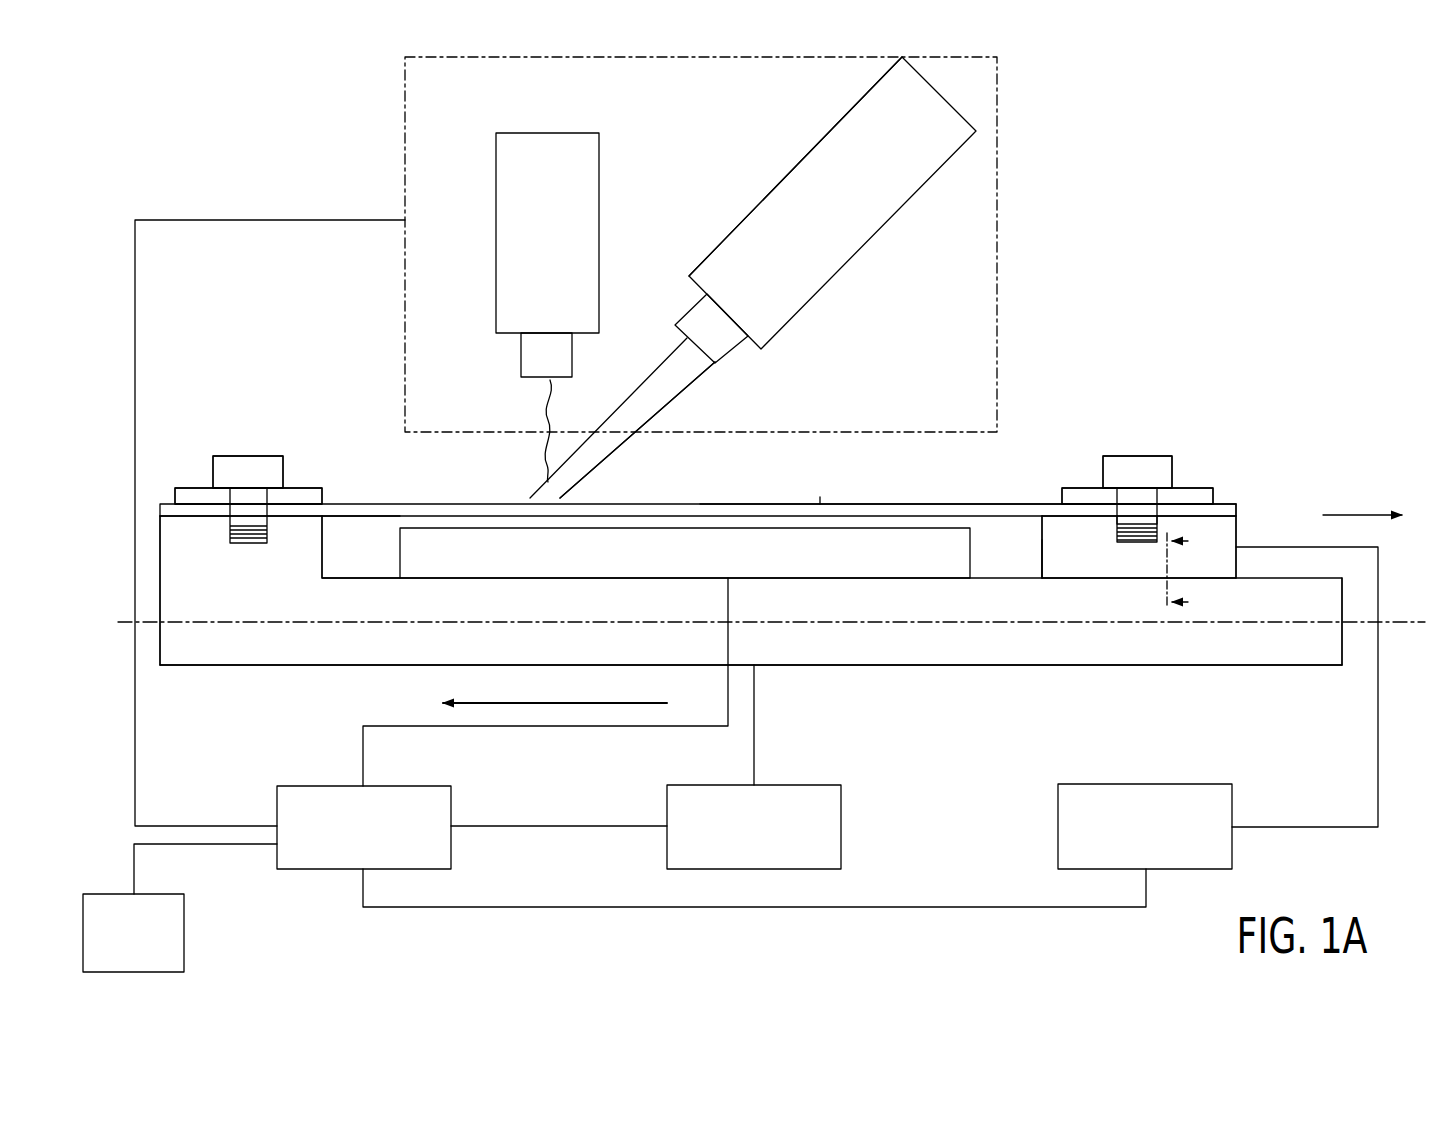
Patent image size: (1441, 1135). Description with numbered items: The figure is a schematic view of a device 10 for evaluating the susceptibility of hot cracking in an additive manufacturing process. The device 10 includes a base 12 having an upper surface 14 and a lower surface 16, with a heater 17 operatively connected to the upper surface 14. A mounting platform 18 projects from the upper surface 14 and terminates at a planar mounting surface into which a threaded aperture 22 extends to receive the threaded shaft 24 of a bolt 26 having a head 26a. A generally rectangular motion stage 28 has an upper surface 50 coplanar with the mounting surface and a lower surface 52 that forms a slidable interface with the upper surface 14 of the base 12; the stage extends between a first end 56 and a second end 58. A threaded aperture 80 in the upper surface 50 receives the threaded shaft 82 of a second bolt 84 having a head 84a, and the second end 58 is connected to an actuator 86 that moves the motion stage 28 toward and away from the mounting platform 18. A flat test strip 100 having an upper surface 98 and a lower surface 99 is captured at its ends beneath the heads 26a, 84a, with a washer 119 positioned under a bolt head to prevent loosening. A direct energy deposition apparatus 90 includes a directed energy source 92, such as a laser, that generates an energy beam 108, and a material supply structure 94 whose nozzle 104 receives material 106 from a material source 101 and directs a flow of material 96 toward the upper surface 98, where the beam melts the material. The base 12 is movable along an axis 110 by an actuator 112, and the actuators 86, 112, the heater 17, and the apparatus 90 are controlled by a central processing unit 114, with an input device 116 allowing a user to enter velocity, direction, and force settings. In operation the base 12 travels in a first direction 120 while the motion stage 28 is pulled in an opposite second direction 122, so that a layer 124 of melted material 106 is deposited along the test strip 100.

The device 10 is at (1295, 451).
The base 12 is at (875, 674).
The upper surface 14 is at (1320, 582).
The lower surface 16 is at (260, 666).
The heater 17 is at (971, 568).
The mounting platform 18 is at (159, 535).
The threaded aperture 22 is at (310, 547).
The threaded shaft 24 is at (242, 549).
The bolt 26 is at (288, 447).
The head 26a is at (248, 456).
The motion stage 28 is at (1055, 521).
The upper surface 50 is at (1231, 514).
The lower surface 52 is at (1240, 614).
The first end 56 is at (1041, 562).
The second end 58 is at (1237, 530).
The threaded aperture 80 is at (1125, 541).
The threaded shaft 82 is at (1108, 525).
The bolt 84 is at (1179, 446).
The head 84a is at (1138, 456).
The actuator 86 is at (1233, 809).
The direct energy deposition apparatus 90 is at (1032, 147).
The directed energy source 92 is at (578, 208).
The material supply structure 94 is at (843, 248).
The flow of material 96 is at (622, 452).
The upper surface 98 is at (358, 509).
The lower surface 99 is at (343, 513).
The test strip 100 is at (900, 510).
The material source 101 is at (797, 166).
The nozzle 104 is at (737, 362).
The material 106 is at (626, 396).
The energy beam 108 is at (550, 385).
The axis 110 is at (1392, 622).
The actuator 112 is at (842, 810).
The central processing unit 114 is at (335, 870).
The input device 116 is at (184, 930).
The washer 119 is at (175, 497).
The first direction 120 is at (556, 696).
The second direction 122 is at (1360, 512).
The layer 124 is at (837, 478).